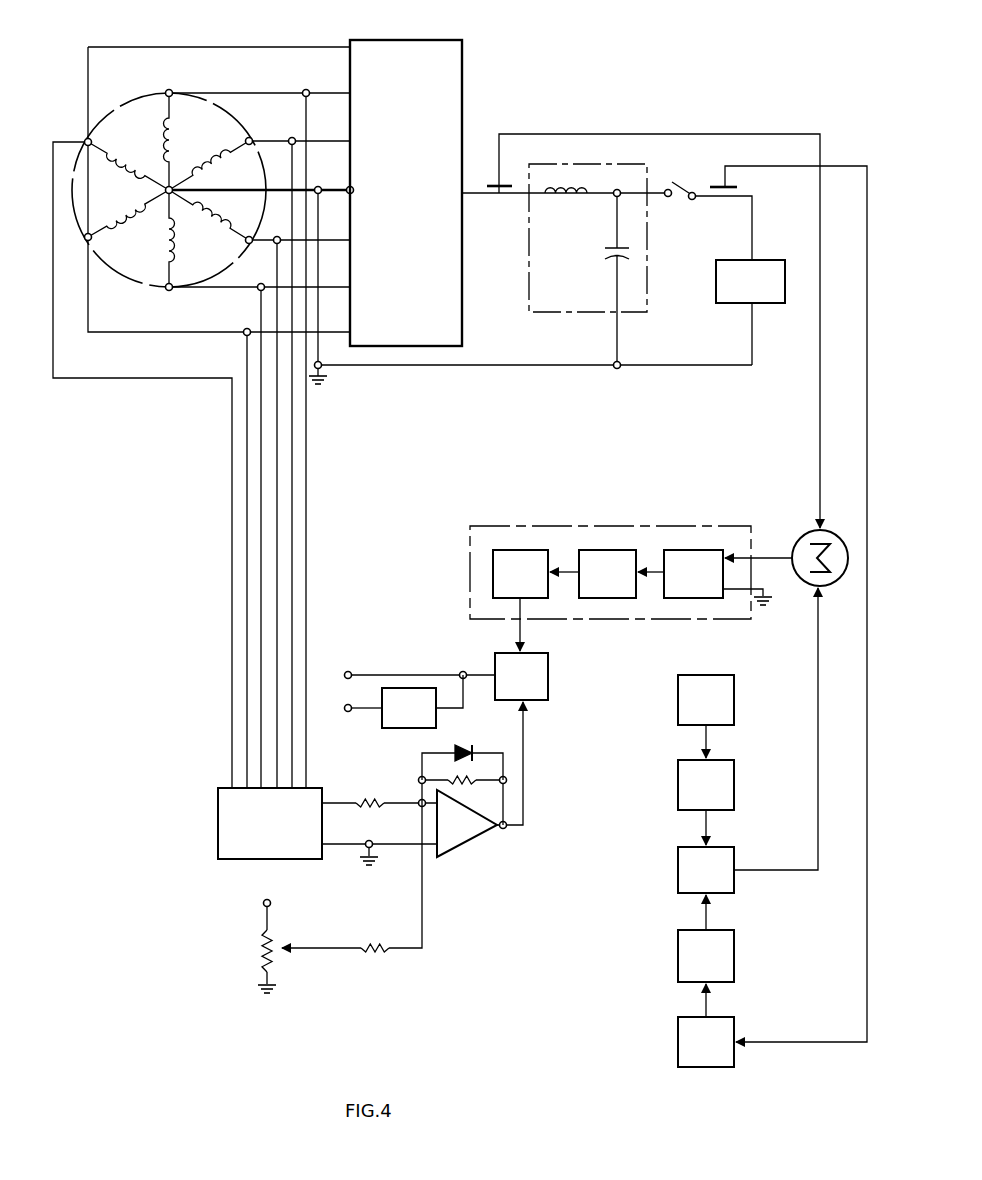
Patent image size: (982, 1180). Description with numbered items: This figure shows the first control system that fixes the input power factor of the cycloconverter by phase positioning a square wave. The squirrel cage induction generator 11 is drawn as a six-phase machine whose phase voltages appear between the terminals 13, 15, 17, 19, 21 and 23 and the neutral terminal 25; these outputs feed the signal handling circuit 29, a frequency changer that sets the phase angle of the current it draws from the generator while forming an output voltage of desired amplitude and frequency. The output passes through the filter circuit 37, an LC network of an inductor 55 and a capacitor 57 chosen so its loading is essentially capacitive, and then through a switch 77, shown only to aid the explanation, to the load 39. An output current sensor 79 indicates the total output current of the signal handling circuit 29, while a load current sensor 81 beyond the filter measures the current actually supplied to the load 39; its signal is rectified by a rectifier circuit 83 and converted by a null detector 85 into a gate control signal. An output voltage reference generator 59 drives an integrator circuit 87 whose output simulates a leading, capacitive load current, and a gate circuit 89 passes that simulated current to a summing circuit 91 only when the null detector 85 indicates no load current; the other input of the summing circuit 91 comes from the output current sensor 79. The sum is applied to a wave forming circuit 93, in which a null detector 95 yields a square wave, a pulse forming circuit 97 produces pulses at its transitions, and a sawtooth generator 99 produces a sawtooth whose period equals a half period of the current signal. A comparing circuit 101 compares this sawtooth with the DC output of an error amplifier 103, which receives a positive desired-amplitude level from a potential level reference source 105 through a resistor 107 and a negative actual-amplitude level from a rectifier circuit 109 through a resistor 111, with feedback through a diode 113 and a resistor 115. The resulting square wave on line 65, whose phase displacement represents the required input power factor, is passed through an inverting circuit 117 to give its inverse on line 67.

The squirrel cage induction generator 11 is at (122, 116).
The terminal 13 is at (170, 92).
The terminal 15 is at (250, 140).
The terminal 17 is at (250, 238).
The terminal 19 is at (168, 290).
The terminal 21 is at (86, 240).
The terminal 23 is at (232, 761).
The neutral terminal 25 is at (92, 142).
The signal handling circuit 29 is at (411, 195).
The filter circuit 37 is at (529, 225).
The load 39 is at (734, 258).
The inductor 55 is at (575, 192).
The capacitor 57 is at (610, 248).
The output voltage reference generator 59 is at (717, 709).
The line 65 is at (348, 672).
The line 67 is at (348, 705).
The switch 77 is at (676, 178).
The output current sensor 79 is at (498, 184).
The load current sensor 81 is at (720, 184).
The rectifier circuit 83 is at (717, 1051).
The null detector 85 is at (717, 965).
The integrator circuit 87 is at (717, 794).
The gate circuit 89 is at (717, 879).
The summing circuit 91 is at (800, 545).
The wave forming circuit 93 is at (631, 519).
The null detector 95 is at (704, 584).
The pulse forming circuit 97 is at (618, 584).
The sawtooth generator 99 is at (531, 584).
The comparing circuit 101 is at (538, 687).
The error amplifier 103 is at (460, 843).
The potential level reference source 105 is at (262, 949).
The resistor 107 is at (372, 944).
The rectifier circuit 109 is at (274, 830).
The resistor 111 is at (368, 799).
The diode 113 is at (456, 746).
The resistor 115 is at (465, 780).
The inverting circuit 117 is at (425, 717).